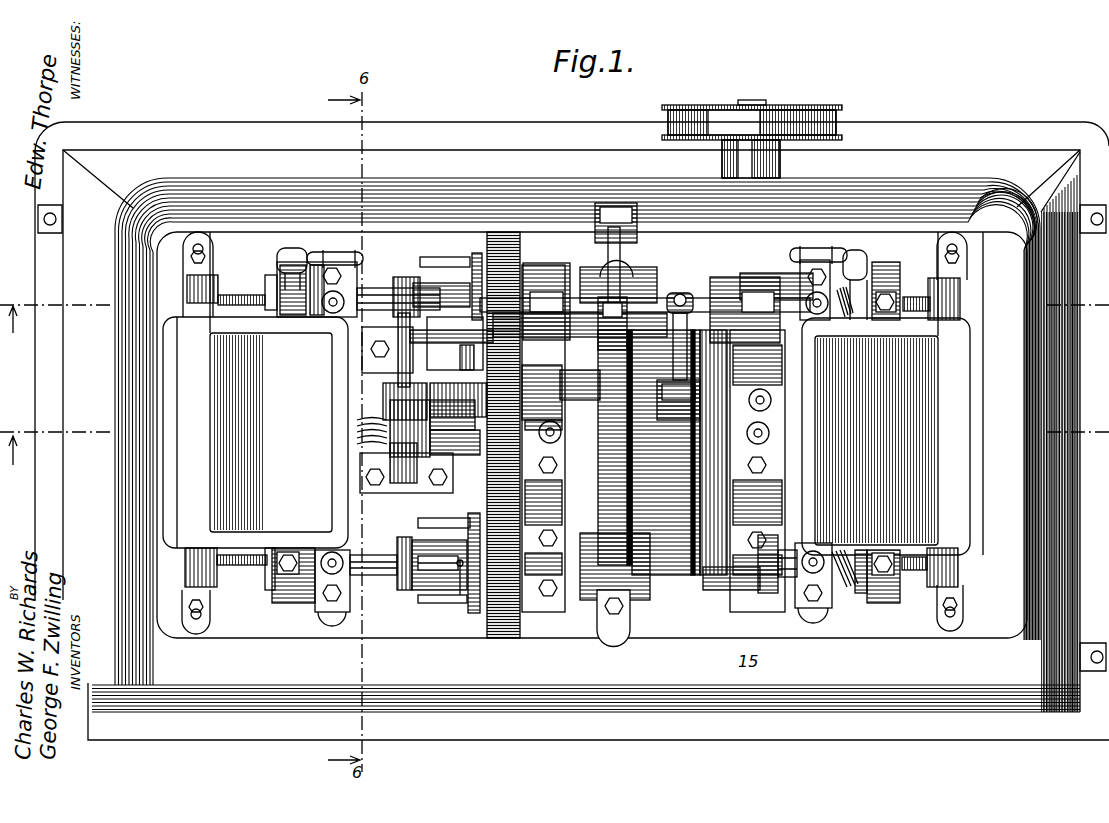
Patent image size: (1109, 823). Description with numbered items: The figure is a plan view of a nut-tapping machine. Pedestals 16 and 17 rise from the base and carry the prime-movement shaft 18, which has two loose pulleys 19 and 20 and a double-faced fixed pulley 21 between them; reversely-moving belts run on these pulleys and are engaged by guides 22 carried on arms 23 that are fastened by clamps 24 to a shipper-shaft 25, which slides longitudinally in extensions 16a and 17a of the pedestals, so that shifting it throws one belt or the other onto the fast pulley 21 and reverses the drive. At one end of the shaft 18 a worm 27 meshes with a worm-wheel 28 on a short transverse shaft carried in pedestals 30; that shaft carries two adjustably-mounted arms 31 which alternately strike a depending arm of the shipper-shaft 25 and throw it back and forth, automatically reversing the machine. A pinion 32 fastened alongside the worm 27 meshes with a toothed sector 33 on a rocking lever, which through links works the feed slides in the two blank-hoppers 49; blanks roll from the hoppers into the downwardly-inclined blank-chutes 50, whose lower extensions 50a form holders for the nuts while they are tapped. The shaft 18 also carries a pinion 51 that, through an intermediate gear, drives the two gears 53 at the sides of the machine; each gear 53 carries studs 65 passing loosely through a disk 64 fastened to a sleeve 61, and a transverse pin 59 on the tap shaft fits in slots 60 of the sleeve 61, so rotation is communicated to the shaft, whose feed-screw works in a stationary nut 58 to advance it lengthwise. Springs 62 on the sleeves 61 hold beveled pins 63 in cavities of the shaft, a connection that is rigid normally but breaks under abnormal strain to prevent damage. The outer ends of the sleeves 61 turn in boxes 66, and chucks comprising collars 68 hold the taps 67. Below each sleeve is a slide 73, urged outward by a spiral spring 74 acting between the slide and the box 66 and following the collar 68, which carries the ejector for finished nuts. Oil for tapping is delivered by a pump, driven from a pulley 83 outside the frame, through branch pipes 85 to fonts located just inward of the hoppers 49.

The pedestal 16 is at (562, 480).
The pedestal extension 16a is at (546, 301).
The pedestal 17 is at (787, 480).
The pedestal extension 17a is at (745, 310).
The prime-movement shaft 18 is at (462, 430).
The loose pulley 19 is at (614, 447).
The loose pulley 20 is at (679, 452).
The double-faced fixed pulley 21 is at (640, 447).
The belt guide 22 is at (637, 240).
The arm 23 is at (610, 265).
The clamp 24 is at (685, 293).
The shipper-shaft 25 is at (462, 343).
The worm 27 is at (390, 440).
The worm-wheel 28 is at (357, 432).
The pedestal 30 is at (362, 353).
The adjustable arm 31 is at (441, 295).
The pinion 32 is at (383, 390).
The toothed sector 33 is at (478, 455).
The blank-hopper 49 is at (815, 378).
The blank-chute 50 is at (205, 285).
The chute extension 50a is at (213, 255).
The pinion 51 is at (580, 385).
The gear 53 is at (520, 250).
The stationary nut 58 is at (595, 596).
The transverse pin 59 is at (462, 596).
The slot 60 is at (410, 588).
The sleeve 61 is at (372, 290).
The spring 62 is at (410, 280).
The pin 63 is at (715, 590).
The disk 64 is at (476, 256).
The stud 65 is at (436, 258).
The box 66 is at (805, 290).
The tap 67 is at (245, 296).
The collar 68 is at (886, 268).
The slide 73 is at (861, 596).
The spiral spring 74 is at (838, 585).
The pulley 83 is at (718, 118).
The branch pipe 85 is at (340, 246).